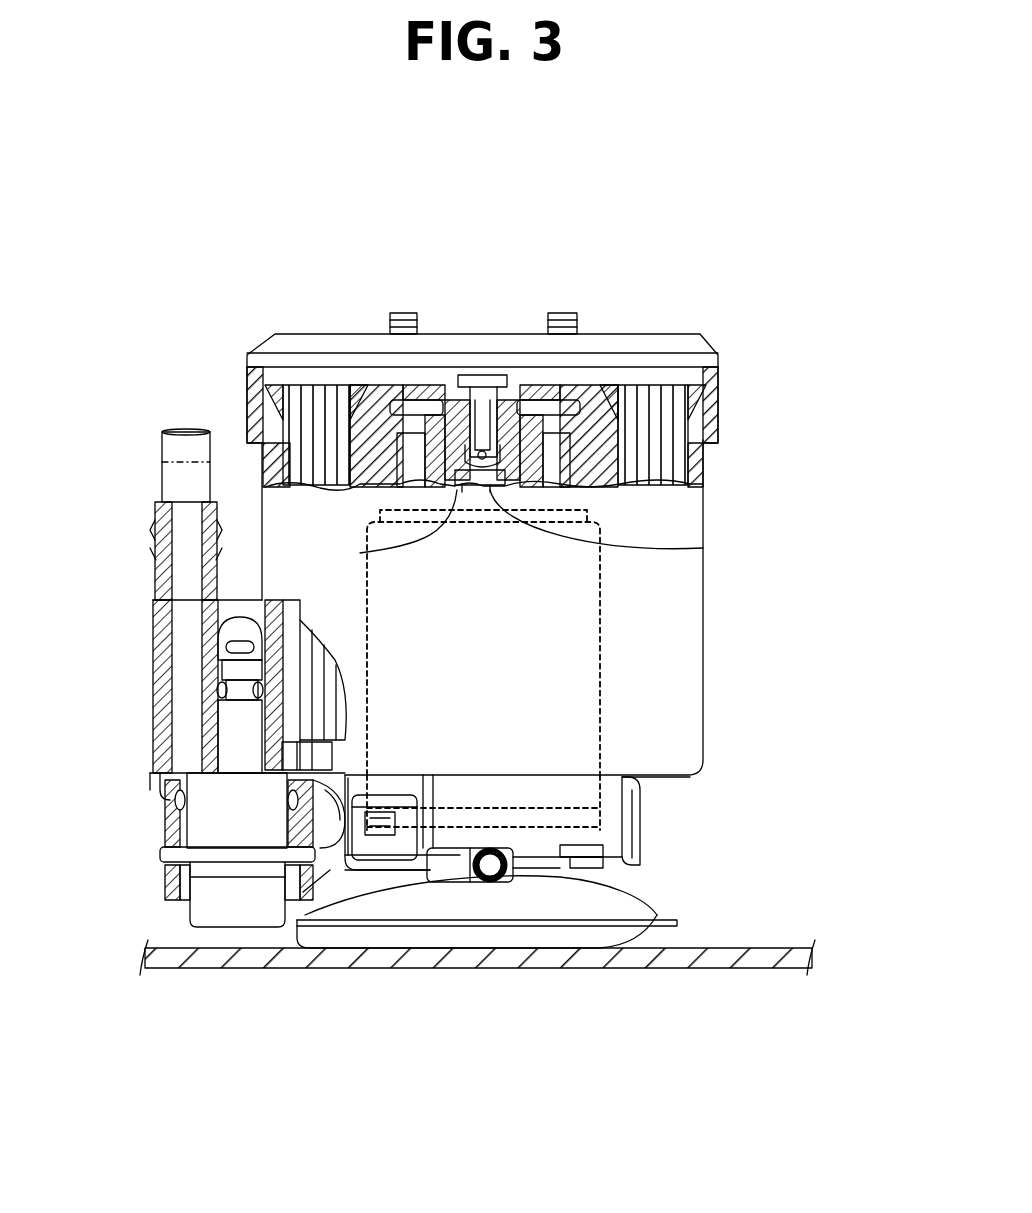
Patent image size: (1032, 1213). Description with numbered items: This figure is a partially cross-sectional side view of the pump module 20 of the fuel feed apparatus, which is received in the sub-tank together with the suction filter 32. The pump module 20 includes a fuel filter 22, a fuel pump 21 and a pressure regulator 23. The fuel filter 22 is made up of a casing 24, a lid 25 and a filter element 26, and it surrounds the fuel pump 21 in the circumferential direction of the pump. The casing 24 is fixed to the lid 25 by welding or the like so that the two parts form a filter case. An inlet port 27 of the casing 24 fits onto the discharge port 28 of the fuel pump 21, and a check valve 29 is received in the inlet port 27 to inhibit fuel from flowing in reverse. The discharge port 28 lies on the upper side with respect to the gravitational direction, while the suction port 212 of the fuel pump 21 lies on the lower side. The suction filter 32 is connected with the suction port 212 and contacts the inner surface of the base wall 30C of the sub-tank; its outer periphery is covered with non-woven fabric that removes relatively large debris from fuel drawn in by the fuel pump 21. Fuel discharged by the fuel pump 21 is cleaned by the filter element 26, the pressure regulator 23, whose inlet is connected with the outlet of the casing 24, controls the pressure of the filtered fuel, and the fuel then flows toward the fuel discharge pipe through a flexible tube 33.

The pump module 20 is at (745, 620).
The fuel pump 21 is at (600, 715).
The fuel filter 22 is at (499, 356).
The pressure regulator 23 is at (207, 832).
The casing 24 is at (247, 377).
The lid 25 is at (277, 340).
The filter element 26 is at (310, 398).
The inlet port 27 is at (703, 548).
The discharge port 28 is at (360, 553).
The check valve 29 is at (505, 421).
The suction filter 32 is at (613, 905).
The flexible tube 33 is at (162, 495).
The suction port 212 is at (620, 835).
The base wall 30C is at (763, 968).